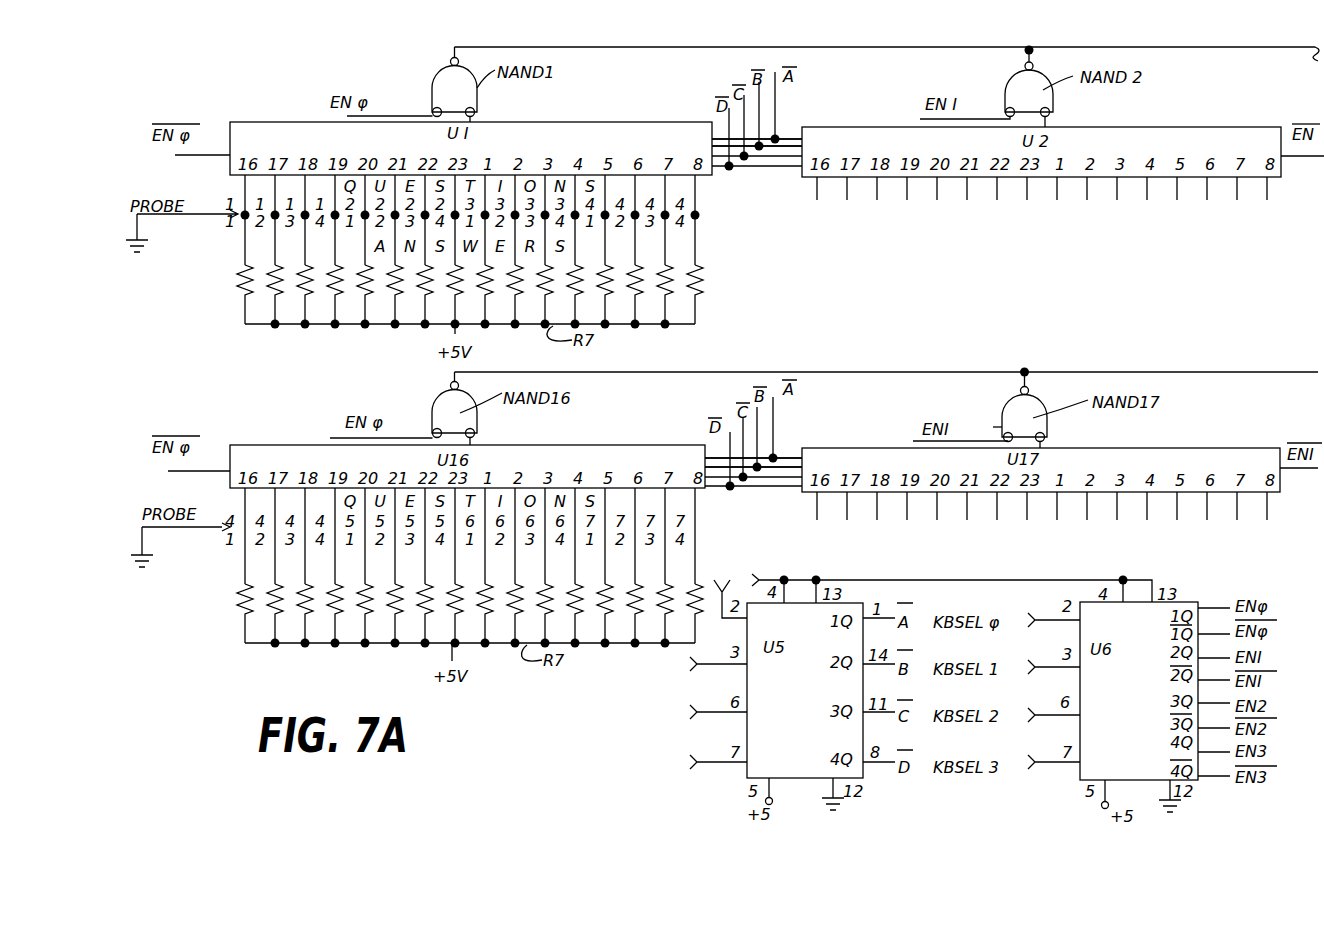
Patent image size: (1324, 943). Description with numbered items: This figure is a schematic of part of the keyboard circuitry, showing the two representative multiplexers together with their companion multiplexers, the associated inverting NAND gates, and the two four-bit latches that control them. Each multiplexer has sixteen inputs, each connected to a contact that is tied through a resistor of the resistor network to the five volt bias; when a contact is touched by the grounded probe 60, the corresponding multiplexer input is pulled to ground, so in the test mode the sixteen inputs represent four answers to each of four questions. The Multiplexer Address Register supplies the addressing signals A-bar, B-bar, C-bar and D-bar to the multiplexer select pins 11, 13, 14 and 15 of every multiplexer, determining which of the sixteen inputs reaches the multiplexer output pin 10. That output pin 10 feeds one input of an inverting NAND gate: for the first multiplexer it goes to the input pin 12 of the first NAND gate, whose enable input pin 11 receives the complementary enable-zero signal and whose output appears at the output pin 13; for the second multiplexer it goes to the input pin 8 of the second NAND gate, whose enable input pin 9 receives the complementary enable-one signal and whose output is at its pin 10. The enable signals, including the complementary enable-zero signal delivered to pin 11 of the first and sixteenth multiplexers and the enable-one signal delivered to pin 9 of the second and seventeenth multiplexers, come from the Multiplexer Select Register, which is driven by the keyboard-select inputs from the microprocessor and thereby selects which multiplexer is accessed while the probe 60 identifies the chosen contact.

The grounded probe 60 is at (190, 218).
The input pin of gate NAND2 8 is at (1048, 110).
The enable input pin of gate NAND2 9 is at (746, 295).
The multiplexer output pin 10 is at (472, 120).
The enable input pin of gate NAND1 11 is at (722, 510).
The input pin of gate NAND1 12 is at (468, 95).
The output pin of gate NAND1 13 is at (719, 504).
The multiplexer select pin 14 is at (712, 146).
The multiplexer select pin 15 is at (713, 139).